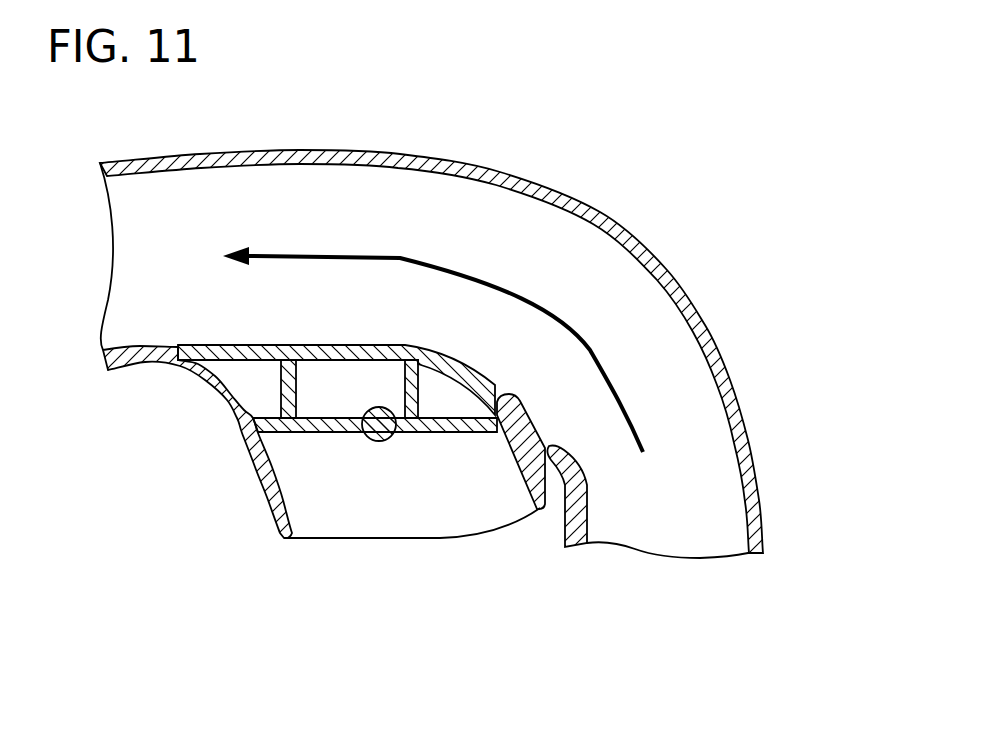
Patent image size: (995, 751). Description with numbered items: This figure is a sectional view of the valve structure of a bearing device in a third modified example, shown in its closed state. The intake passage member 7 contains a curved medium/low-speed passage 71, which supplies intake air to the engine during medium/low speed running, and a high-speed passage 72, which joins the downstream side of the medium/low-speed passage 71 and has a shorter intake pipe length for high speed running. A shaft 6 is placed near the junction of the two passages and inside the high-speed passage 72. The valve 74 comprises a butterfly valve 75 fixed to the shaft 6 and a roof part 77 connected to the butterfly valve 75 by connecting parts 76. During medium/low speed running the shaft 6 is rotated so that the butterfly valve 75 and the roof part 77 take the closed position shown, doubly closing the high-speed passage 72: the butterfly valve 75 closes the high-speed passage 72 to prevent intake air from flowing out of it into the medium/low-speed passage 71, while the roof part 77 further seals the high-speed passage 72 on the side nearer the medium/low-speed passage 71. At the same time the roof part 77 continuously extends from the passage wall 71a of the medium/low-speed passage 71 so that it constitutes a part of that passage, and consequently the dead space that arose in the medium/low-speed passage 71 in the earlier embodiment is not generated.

The intake passage member 7 is at (667, 272).
The medium/low-speed passage 71 is at (686, 485).
The passage wall 71a is at (568, 448).
The valve 74 is at (252, 330).
The roof part 77 is at (350, 343).
The connecting parts 76 is at (297, 383).
The butterfly valve 75 is at (308, 433).
The shaft 6 is at (380, 443).
The high-speed passage 72 is at (457, 504).